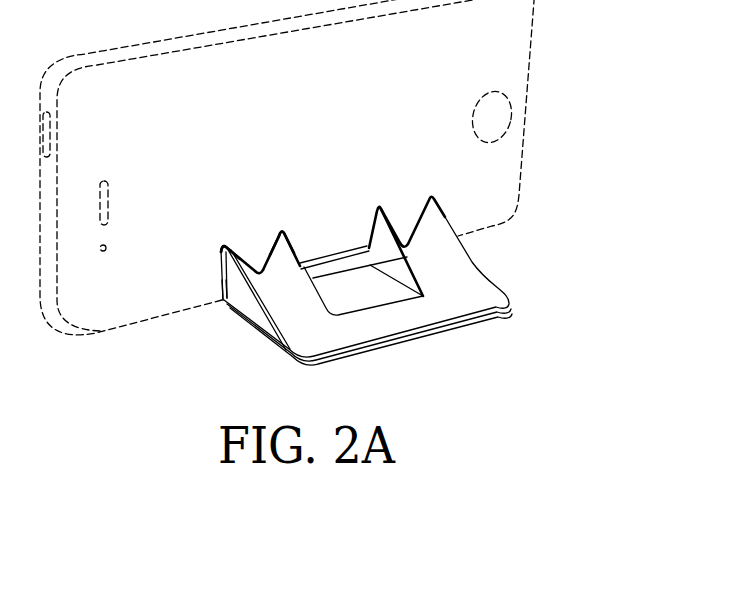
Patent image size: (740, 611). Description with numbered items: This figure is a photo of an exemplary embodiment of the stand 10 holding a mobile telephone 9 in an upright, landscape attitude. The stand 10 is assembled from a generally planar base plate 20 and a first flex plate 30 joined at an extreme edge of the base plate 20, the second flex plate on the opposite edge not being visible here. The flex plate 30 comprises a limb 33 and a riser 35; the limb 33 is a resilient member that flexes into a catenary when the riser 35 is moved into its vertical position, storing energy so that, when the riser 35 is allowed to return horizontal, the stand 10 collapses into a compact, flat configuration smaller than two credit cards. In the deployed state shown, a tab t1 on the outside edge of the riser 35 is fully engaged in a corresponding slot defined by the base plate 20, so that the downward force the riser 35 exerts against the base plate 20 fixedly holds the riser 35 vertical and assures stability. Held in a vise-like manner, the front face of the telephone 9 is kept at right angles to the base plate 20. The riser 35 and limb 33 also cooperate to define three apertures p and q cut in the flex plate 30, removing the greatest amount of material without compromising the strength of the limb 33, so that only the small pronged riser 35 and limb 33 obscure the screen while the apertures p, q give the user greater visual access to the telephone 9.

The mobile telephone 9 is at (540, 69).
The stand 10 is at (342, 254).
The base plate 20 is at (260, 337).
The first flex plate 30 is at (245, 305).
The first limb 33 is at (302, 312).
The first riser 35 is at (337, 271).
The aperture p is at (256, 257).
The aperture q is at (333, 247).
The tab t1 is at (262, 293).